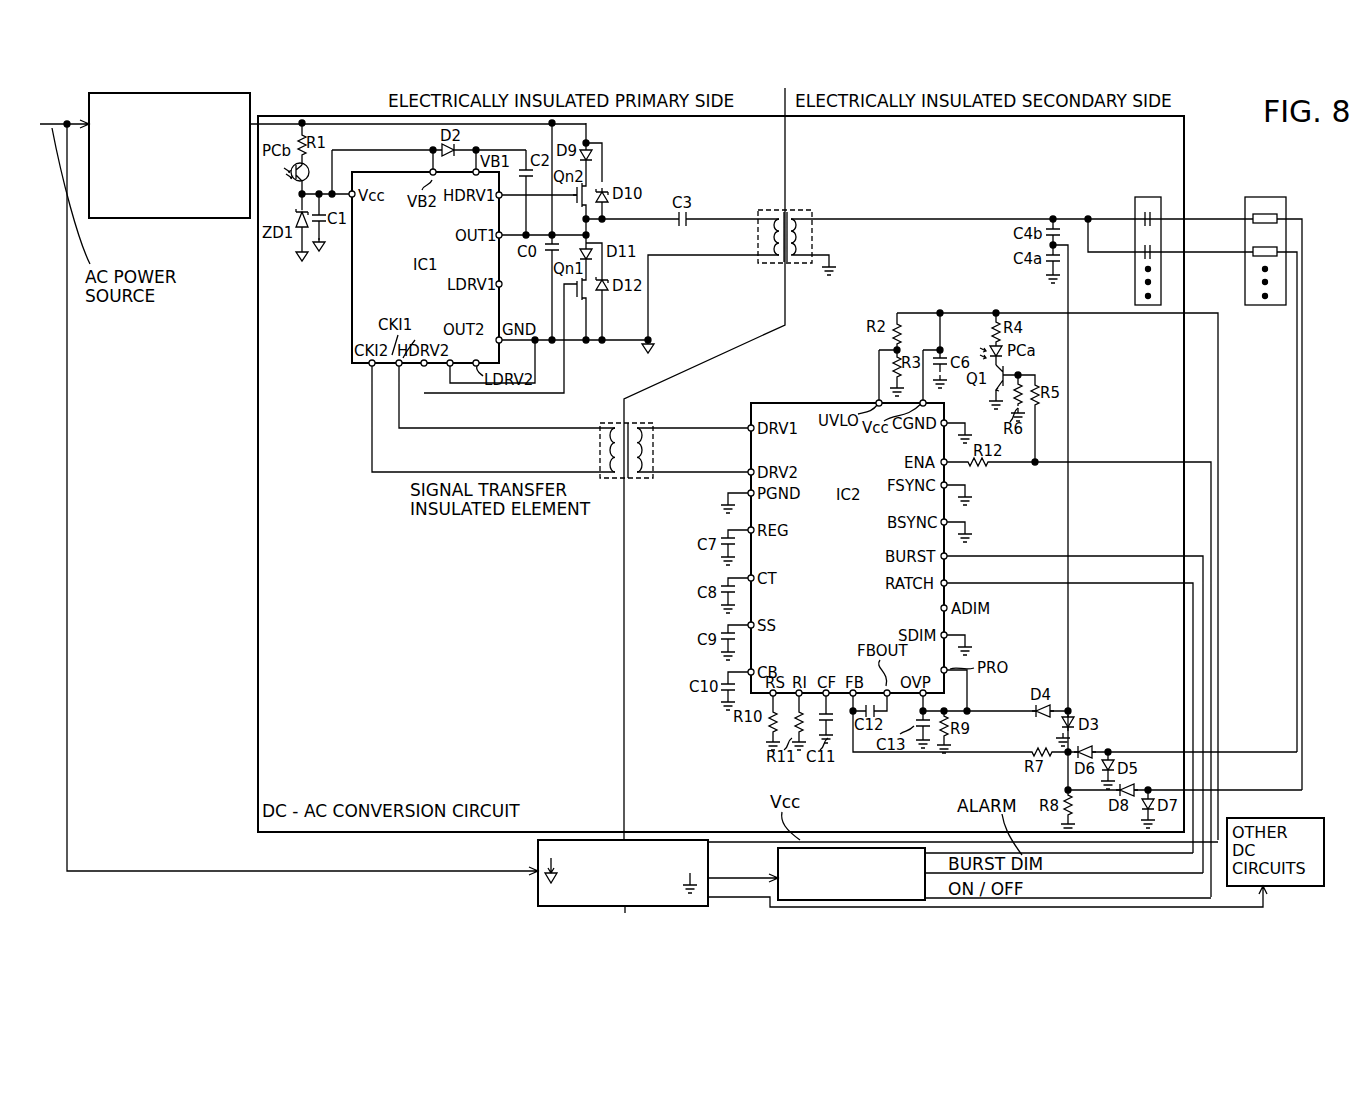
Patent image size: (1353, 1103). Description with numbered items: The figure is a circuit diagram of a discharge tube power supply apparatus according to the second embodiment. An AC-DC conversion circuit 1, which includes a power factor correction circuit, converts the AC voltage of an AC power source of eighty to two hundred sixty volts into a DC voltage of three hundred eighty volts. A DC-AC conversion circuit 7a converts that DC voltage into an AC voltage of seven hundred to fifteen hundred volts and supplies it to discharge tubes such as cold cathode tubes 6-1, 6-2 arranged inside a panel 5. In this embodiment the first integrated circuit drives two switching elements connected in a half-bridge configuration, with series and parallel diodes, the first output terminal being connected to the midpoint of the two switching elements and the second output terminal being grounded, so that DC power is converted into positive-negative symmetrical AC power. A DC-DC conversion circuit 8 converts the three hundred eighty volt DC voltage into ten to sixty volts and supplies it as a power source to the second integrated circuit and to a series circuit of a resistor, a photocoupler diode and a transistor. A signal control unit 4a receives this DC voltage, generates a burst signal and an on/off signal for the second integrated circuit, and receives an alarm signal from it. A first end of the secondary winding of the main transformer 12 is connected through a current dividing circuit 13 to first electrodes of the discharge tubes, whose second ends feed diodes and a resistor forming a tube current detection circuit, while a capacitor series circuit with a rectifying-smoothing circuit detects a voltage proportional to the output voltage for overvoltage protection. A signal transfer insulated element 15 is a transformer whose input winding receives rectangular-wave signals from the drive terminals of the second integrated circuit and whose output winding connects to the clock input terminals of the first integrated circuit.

The AC-DC conversion circuit 1 is at (214, 220).
The signal control unit 4a is at (776, 862).
The panel 5 is at (1241, 225).
The cold cathode tube 6-1 is at (1250, 226).
The cold cathode tube 6-2 is at (1250, 258).
The DC-AC conversion circuit 7a is at (1184, 128).
The DC-DC conversion circuit 8 is at (537, 885).
The main transformer 12 is at (806, 210).
The current dividing circuit 13 is at (1137, 196).
The signal transfer insulated element 15 is at (647, 482).